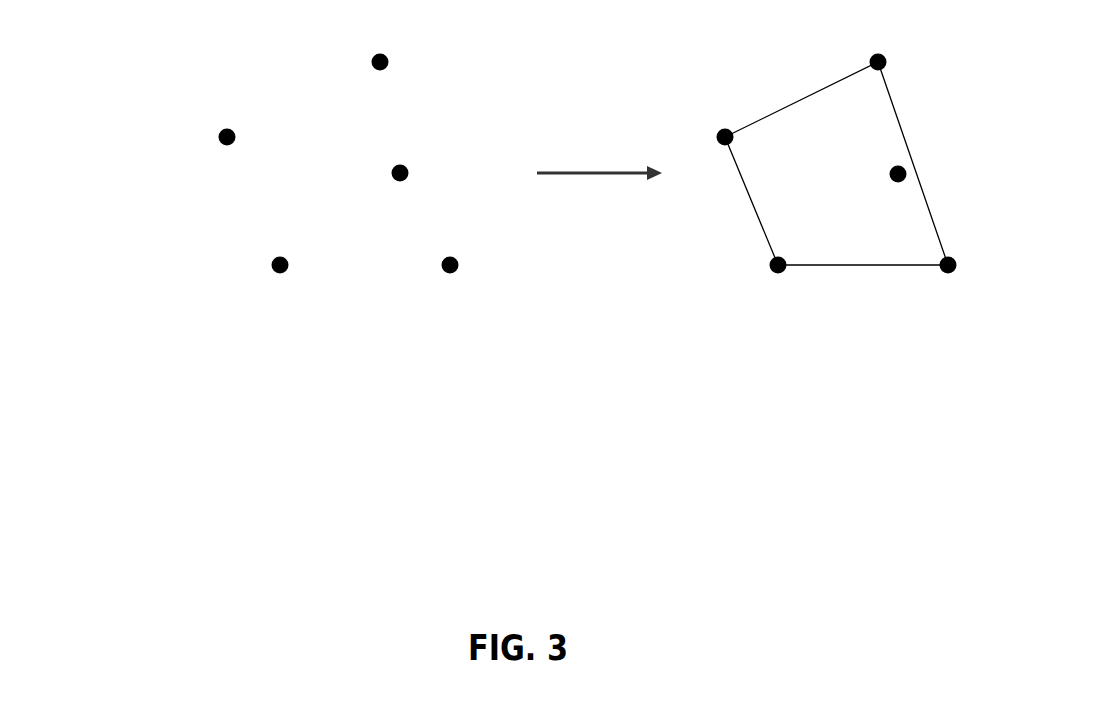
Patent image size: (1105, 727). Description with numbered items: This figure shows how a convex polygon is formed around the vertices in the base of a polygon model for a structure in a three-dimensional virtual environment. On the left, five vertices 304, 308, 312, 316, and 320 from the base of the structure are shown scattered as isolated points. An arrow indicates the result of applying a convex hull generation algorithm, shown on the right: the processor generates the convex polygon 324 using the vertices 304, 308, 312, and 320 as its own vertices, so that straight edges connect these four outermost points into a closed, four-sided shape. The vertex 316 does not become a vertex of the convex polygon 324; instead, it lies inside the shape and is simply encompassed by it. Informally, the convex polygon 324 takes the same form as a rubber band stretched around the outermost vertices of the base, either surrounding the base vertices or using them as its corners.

The vertex 304 is at (271, 267).
The vertex 308 is at (220, 142).
The vertex 312 is at (388, 54).
The vertex 316 is at (407, 165).
The vertex 320 is at (457, 271).
The convex polygon 324 is at (930, 210).